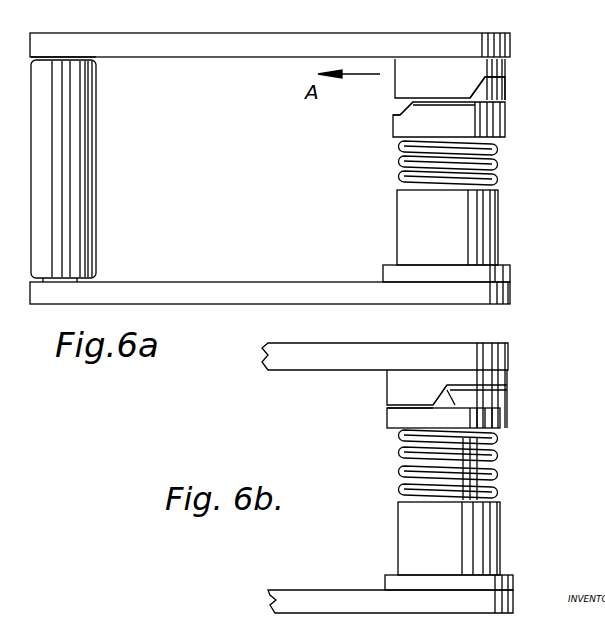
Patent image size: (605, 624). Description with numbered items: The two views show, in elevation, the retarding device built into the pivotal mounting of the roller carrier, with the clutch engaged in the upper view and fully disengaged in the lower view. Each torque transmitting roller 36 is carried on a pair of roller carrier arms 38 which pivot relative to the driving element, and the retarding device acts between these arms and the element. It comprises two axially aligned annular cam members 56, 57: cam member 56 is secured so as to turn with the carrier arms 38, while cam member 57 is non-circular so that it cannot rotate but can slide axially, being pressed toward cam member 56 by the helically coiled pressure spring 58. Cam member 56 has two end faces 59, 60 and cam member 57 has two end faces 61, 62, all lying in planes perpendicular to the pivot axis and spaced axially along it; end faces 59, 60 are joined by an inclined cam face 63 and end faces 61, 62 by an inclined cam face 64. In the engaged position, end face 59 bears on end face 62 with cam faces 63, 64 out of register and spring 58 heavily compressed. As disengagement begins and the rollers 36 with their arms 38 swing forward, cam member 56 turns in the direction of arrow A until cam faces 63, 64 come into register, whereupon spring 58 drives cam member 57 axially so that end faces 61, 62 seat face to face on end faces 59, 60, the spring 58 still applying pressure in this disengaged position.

In FIG. 6A, the torque transmitting roller 36 is at (96, 222).
In FIG. 6A, the roller carrier arm 38 is at (294, 37).
In FIG. 6B, the roller carrier arm 38 is at (283, 595).
In FIG. 6A, the cam member 56 is at (504, 63).
In FIG. 6B, the cam member 56 is at (503, 372).
In FIG. 6A, the cam member 57 is at (506, 119).
In FIG. 6B, the cam member 57 is at (503, 427).
In FIG. 6A, the helically coiled pressure spring 58 is at (500, 174).
In FIG. 6B, the helically coiled pressure spring 58 is at (498, 464).
In FIG. 6A, the end face 59 is at (404, 98).
In FIG. 6B, the end face 59 is at (397, 402).
In FIG. 6A, the end face 60 is at (498, 80).
In FIG. 6B, the end face 60 is at (477, 387).
In FIG. 6A, the end face 61 is at (398, 117).
In FIG. 6B, the end face 61 is at (410, 408).
In FIG. 6B, the end face 62 is at (506, 399).
In FIG. 6A, the cam face 63 is at (489, 88).
In FIG. 6B, the cam face 63 is at (430, 395).
In FIG. 6A, the cam face 64 is at (410, 105).
In FIG. 6B, the cam face 64 is at (447, 393).